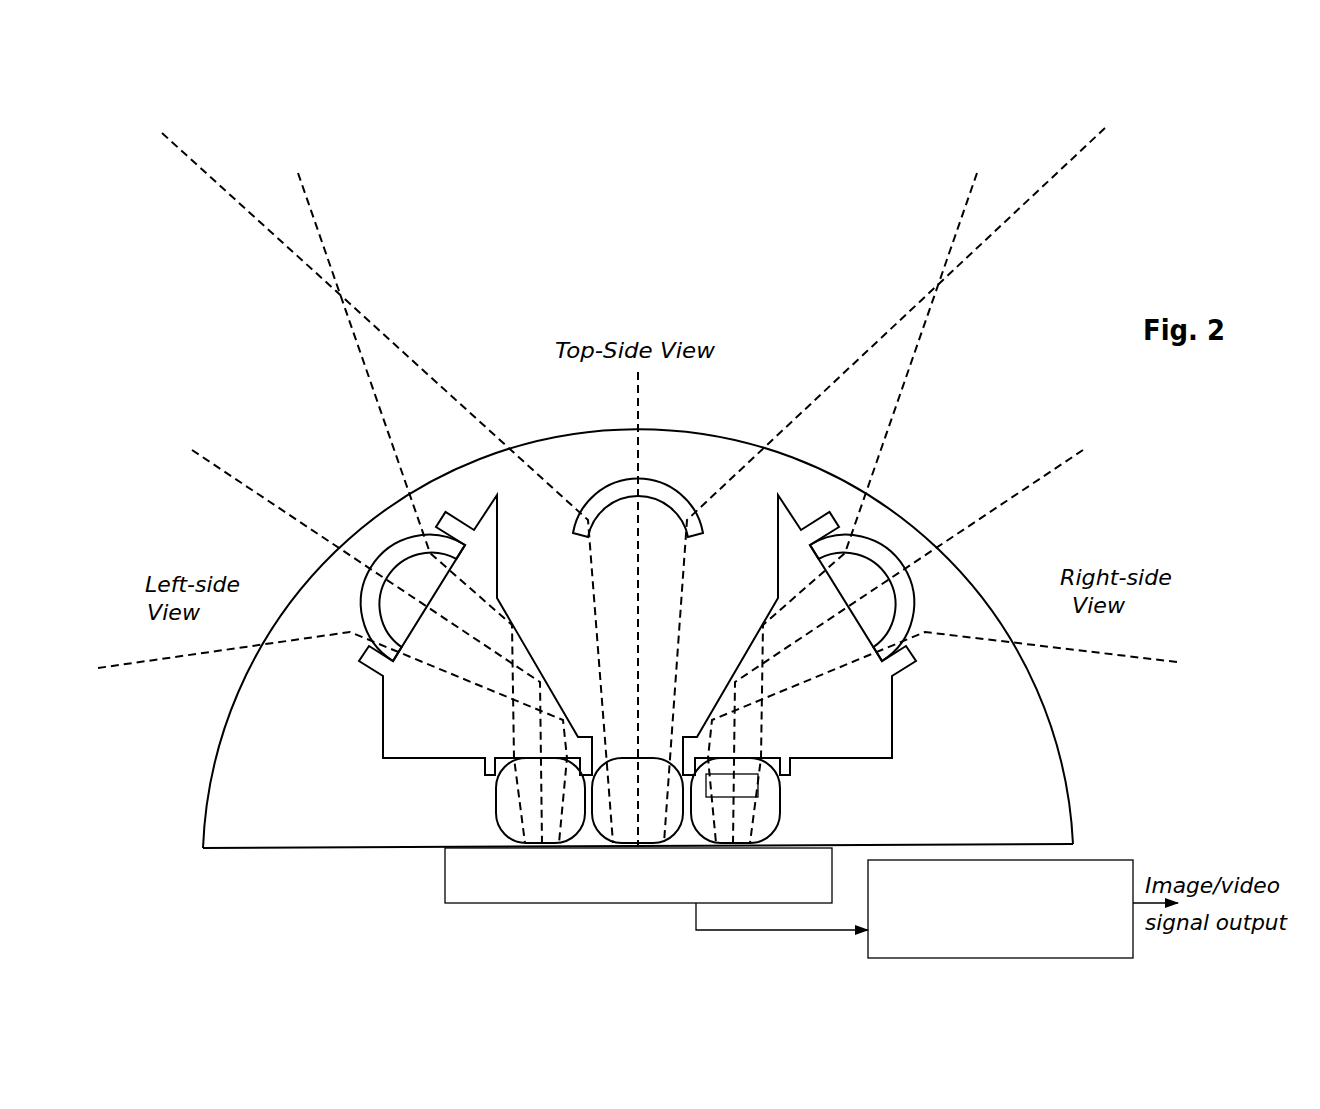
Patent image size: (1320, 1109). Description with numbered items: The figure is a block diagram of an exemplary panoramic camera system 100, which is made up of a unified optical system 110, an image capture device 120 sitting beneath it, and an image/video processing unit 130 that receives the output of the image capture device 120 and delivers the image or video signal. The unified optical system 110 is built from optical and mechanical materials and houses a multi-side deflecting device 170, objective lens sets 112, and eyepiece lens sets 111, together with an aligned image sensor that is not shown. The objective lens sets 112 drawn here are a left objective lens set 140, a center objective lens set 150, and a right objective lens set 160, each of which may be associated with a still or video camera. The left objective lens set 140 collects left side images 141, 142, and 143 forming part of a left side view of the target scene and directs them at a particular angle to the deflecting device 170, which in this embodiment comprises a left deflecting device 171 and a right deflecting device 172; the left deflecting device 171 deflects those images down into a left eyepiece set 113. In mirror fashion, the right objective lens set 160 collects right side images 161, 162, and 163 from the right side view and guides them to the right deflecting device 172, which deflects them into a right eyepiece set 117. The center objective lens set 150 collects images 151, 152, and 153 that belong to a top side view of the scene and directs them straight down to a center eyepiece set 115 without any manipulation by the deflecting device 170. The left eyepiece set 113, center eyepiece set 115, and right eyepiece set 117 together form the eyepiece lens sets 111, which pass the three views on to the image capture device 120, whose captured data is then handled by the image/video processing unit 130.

The panoramic camera system 100 is at (243, 904).
The unified optical system 110 is at (972, 826).
The eyepiece lens sets 111 is at (699, 770).
The objective lens sets 112 is at (887, 548).
The left eyepiece set 113 is at (495, 795).
The center eyepiece set 115 is at (607, 836).
The right eyepiece set 117 is at (790, 784).
The image capture device 120 is at (798, 889).
The image/video processing unit 130 is at (1003, 946).
The left objective lens set 140 is at (388, 548).
The left side image 141 is at (118, 675).
The left side image 142 is at (273, 518).
The left side image 143 is at (325, 228).
The center objective lens set 150 is at (607, 483).
The top side image 151 is at (233, 208).
The top side image 152 is at (640, 425).
The top side image 153 is at (988, 243).
The right objective lens set 160 is at (880, 542).
The right side image 161 is at (1100, 668).
The right side image 162 is at (1042, 488).
The right side image 163 is at (943, 235).
The multi-side deflecting device 170 is at (793, 512).
The left deflecting device 171 is at (485, 753).
The right deflecting device 172 is at (855, 745).